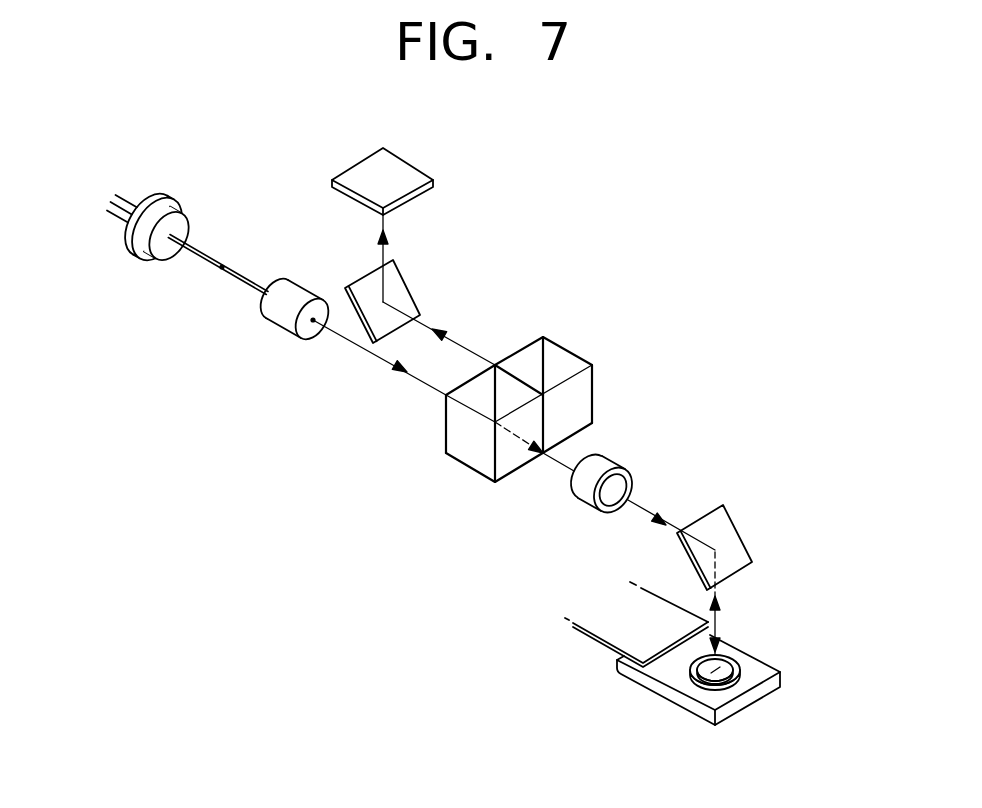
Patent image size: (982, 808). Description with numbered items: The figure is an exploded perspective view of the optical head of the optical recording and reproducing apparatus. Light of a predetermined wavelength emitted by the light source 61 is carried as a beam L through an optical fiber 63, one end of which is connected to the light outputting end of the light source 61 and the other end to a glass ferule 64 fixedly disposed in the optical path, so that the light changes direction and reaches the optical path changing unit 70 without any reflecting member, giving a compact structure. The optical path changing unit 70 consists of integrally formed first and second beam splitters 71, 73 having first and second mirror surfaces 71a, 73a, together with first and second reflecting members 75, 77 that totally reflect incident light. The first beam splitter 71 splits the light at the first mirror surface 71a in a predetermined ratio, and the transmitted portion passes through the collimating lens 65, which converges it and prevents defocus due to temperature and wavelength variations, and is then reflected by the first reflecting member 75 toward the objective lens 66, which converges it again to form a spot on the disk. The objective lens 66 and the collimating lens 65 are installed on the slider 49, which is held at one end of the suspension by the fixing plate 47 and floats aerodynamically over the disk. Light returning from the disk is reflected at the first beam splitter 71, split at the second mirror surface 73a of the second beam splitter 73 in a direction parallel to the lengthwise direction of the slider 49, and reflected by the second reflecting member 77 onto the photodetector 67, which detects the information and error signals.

The light source 61 is at (131, 254).
The optical fiber 63 is at (200, 256).
The glass ferule 64 is at (278, 322).
The laser beam L is at (363, 352).
The photodetector 67 is at (413, 175).
The second reflecting member 77 is at (403, 293).
The optical path changing unit 70 is at (518, 373).
The first beam splitter 71 is at (465, 447).
The first mirror surface 71a is at (494, 398).
The second beam splitter 73 is at (594, 399).
The second mirror surface 73a is at (544, 363).
The collimating lens 65 is at (620, 463).
The first reflecting member 75 is at (733, 543).
The objective lens 66 is at (728, 657).
The fixing plate 47 is at (597, 642).
The slider 49 is at (777, 683).